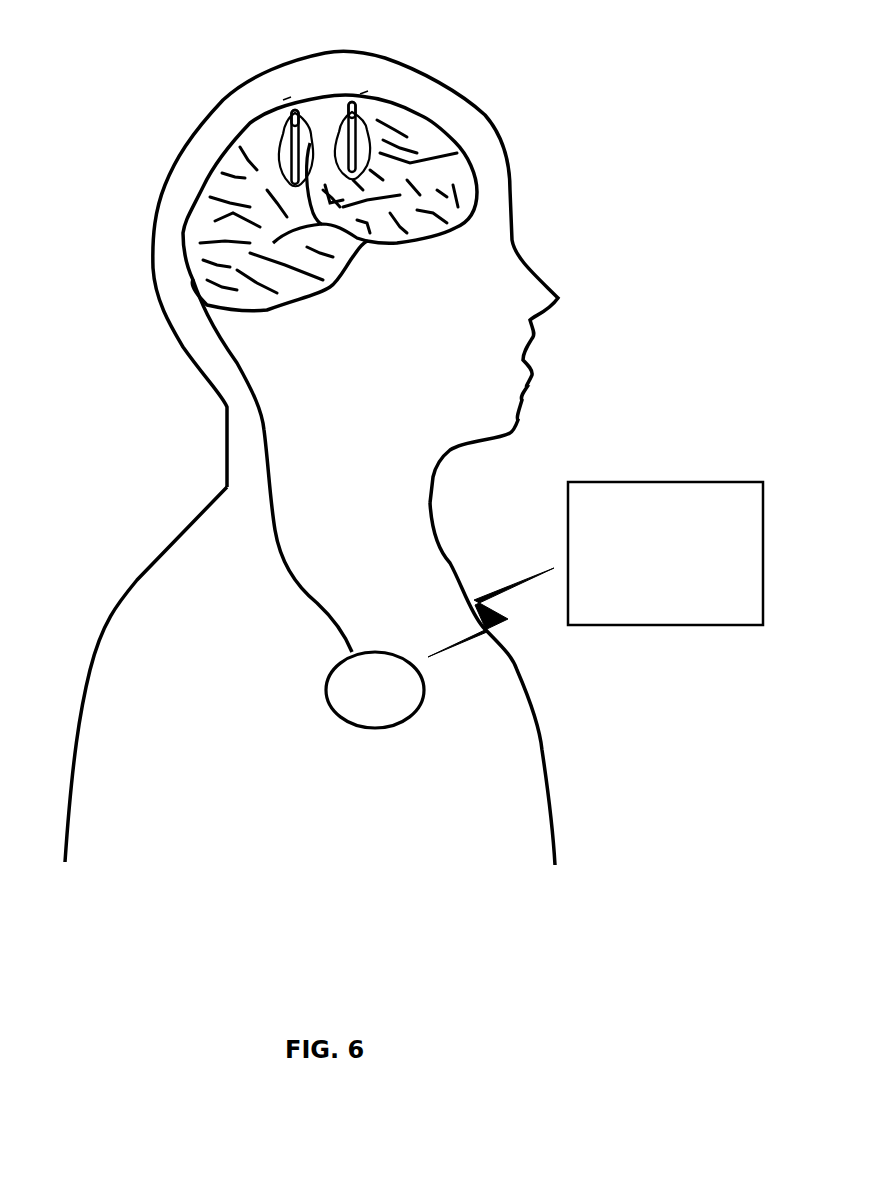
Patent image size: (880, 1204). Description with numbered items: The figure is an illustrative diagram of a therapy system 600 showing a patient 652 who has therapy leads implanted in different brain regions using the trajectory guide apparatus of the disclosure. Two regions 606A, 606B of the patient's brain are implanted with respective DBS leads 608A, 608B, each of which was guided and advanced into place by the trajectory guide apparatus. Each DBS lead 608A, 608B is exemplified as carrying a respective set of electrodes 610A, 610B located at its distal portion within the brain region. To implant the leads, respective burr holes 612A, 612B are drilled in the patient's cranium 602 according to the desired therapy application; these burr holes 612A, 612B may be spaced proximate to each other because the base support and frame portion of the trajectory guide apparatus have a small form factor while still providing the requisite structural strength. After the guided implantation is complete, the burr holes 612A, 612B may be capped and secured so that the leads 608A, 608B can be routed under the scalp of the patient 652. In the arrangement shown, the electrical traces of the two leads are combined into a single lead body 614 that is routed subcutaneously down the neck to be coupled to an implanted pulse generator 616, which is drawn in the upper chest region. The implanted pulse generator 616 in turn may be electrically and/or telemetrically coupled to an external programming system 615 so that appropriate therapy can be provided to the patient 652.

The therapy system 600 is at (552, 960).
The cranium 602 is at (321, 277).
The brain region 606A is at (178, 186).
The brain region 606B is at (474, 170).
The DBS lead 608A is at (199, 87).
The DBS lead 608B is at (444, 80).
The set of electrodes 610A is at (206, 137).
The set of electrodes 610B is at (437, 130).
The burr hole 612A is at (240, 60).
The burr hole 612B is at (413, 54).
The lead body 614 is at (239, 466).
The external programming system 615 is at (665, 553).
The implanted pulse generator (IPG) 616 is at (375, 690).
The patient 652 is at (310, 676).